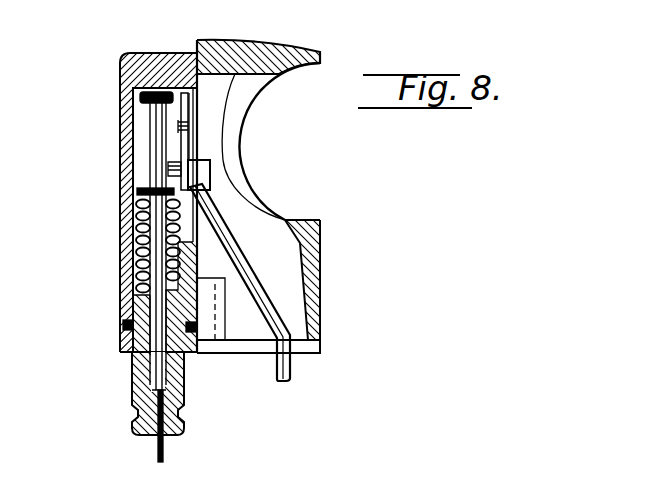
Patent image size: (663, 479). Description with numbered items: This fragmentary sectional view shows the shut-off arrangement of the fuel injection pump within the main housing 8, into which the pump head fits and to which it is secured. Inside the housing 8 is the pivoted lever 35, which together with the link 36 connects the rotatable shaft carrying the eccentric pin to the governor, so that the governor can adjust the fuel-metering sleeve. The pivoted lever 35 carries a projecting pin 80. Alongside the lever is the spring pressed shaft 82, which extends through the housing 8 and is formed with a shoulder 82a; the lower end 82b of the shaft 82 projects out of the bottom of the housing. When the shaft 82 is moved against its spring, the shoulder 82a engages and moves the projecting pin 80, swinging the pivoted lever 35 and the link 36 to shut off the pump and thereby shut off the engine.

The main housing 8 is at (308, 262).
The pivoted lever 35 is at (185, 136).
The link 36 is at (245, 277).
The projecting pin 80 is at (163, 158).
The spring pressed shaft 82 is at (150, 128).
The shoulder 82a is at (158, 112).
The rod tip 82b is at (160, 457).